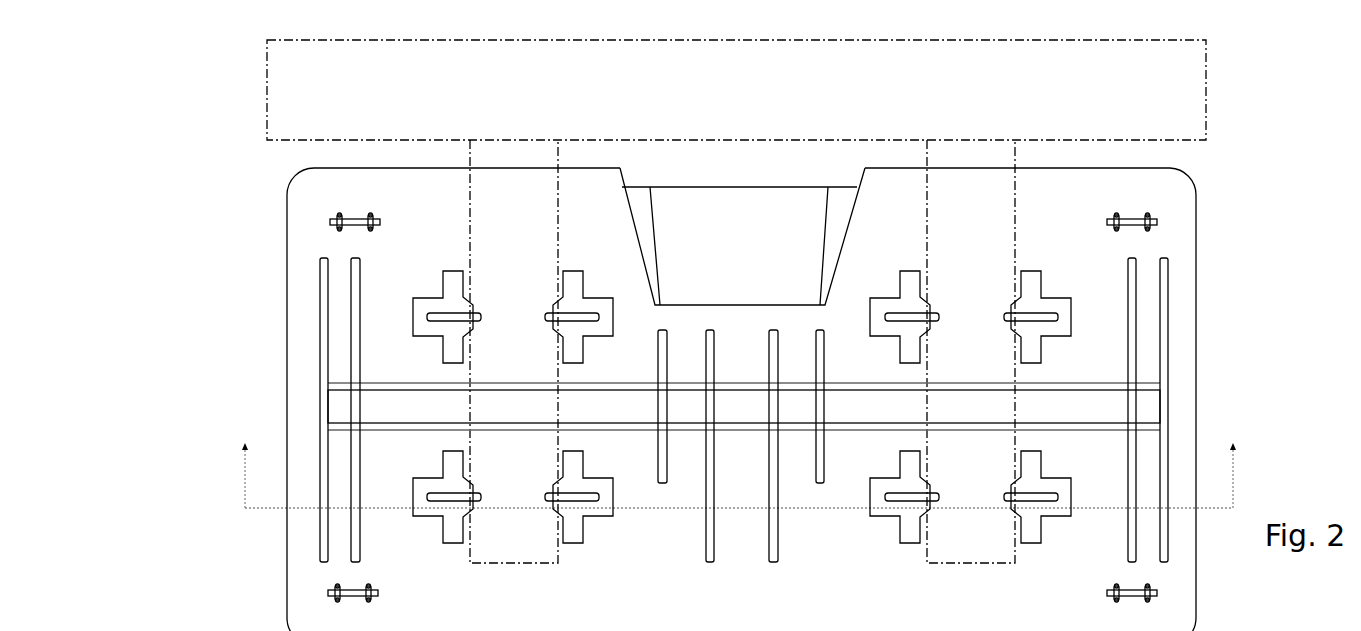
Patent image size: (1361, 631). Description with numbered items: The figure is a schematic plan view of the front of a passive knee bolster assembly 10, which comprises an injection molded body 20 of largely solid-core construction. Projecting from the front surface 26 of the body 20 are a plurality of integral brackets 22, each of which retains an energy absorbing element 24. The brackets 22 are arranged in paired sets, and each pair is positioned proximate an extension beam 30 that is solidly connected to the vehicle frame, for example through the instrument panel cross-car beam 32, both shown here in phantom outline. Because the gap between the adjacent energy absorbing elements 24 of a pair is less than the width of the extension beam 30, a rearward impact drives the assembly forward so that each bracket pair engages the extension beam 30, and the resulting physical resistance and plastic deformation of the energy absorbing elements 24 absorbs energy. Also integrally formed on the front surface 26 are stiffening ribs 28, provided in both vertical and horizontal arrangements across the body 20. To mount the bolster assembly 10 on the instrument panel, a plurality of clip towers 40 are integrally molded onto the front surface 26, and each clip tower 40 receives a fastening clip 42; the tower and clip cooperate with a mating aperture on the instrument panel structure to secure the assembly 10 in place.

The knee bolster assembly 10 is at (1256, 161).
The injection molded body 20 is at (1183, 235).
The integral bracket 22 is at (1062, 326).
The energy absorbing element 24 is at (1000, 316).
The front surface 26 is at (306, 343).
The stiffening rib 28 is at (1163, 340).
The extension beam 30 is at (937, 553).
The instrument panel cross-car beam 32 is at (277, 112).
The clip tower 40 is at (336, 224).
The fastening clip 42 is at (361, 216).